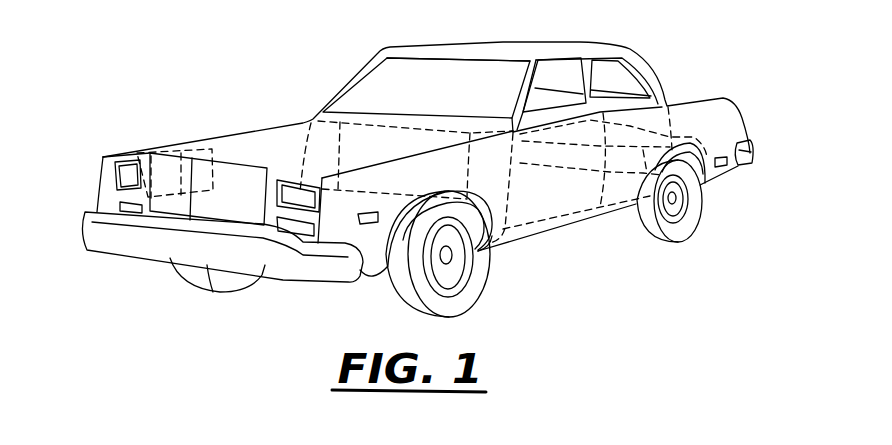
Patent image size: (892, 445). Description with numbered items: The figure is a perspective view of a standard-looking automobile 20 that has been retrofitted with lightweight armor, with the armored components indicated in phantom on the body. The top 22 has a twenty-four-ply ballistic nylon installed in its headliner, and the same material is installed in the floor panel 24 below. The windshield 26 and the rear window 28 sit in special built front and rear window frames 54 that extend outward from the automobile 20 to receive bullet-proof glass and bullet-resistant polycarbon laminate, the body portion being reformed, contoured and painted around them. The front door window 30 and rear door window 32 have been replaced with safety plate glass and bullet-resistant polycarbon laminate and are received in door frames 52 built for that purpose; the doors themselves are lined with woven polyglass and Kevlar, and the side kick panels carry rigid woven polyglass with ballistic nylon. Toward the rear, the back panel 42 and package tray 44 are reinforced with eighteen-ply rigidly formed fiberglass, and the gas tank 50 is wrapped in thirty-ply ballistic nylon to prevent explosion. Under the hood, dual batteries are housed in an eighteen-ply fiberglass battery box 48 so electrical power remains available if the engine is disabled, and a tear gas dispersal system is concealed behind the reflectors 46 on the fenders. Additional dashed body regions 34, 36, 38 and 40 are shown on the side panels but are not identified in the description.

The automobile 20 is at (296, 78).
The top 22 is at (503, 46).
The floor panel 24 is at (513, 252).
The windshield 26 is at (432, 98).
The rear window 28 is at (607, 64).
The front door window 30 is at (541, 112).
The rear door window 32 is at (601, 88).
The door panel 34 is at (551, 209).
The rear quarter panel 36 is at (614, 199).
The hinge pillar 38 is at (481, 182).
The front fender 40 is at (396, 181).
The back panel 42 is at (570, 98).
The package tray 44 is at (638, 96).
The reflectors 46 is at (368, 224).
The battery box 48 is at (152, 149).
The gas tank 50 is at (696, 136).
The door frames 52 is at (584, 66).
The front and rear window frames 54 is at (421, 50).